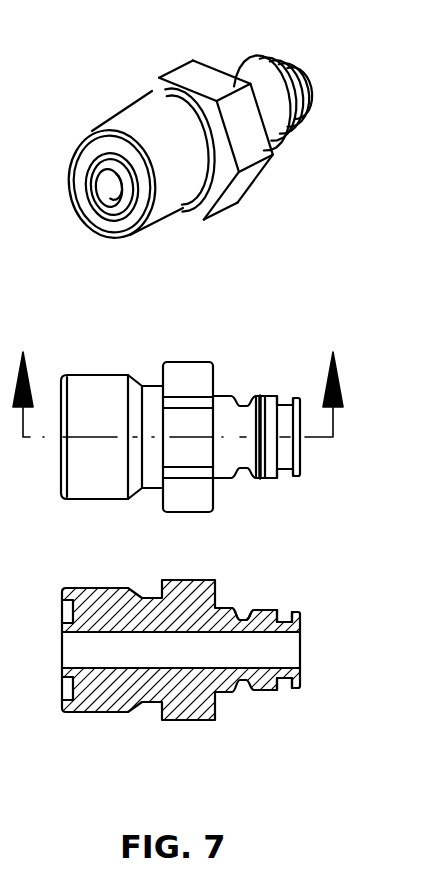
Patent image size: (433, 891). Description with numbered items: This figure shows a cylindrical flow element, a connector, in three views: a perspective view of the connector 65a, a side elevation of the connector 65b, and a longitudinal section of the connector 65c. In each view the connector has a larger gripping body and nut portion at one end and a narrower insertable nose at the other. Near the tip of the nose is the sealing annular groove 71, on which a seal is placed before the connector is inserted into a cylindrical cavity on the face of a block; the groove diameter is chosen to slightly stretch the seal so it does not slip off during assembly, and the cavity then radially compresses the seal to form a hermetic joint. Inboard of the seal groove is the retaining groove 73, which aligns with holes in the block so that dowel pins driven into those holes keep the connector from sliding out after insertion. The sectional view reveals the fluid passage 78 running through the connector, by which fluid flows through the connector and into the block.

The connector 65a is at (183, 79).
The connector 65b is at (183, 383).
The connector 65c is at (175, 582).
The sealing annular groove 71 is at (297, 122).
The retaining groove 73 is at (282, 138).
The fluid passage 78 is at (110, 193).